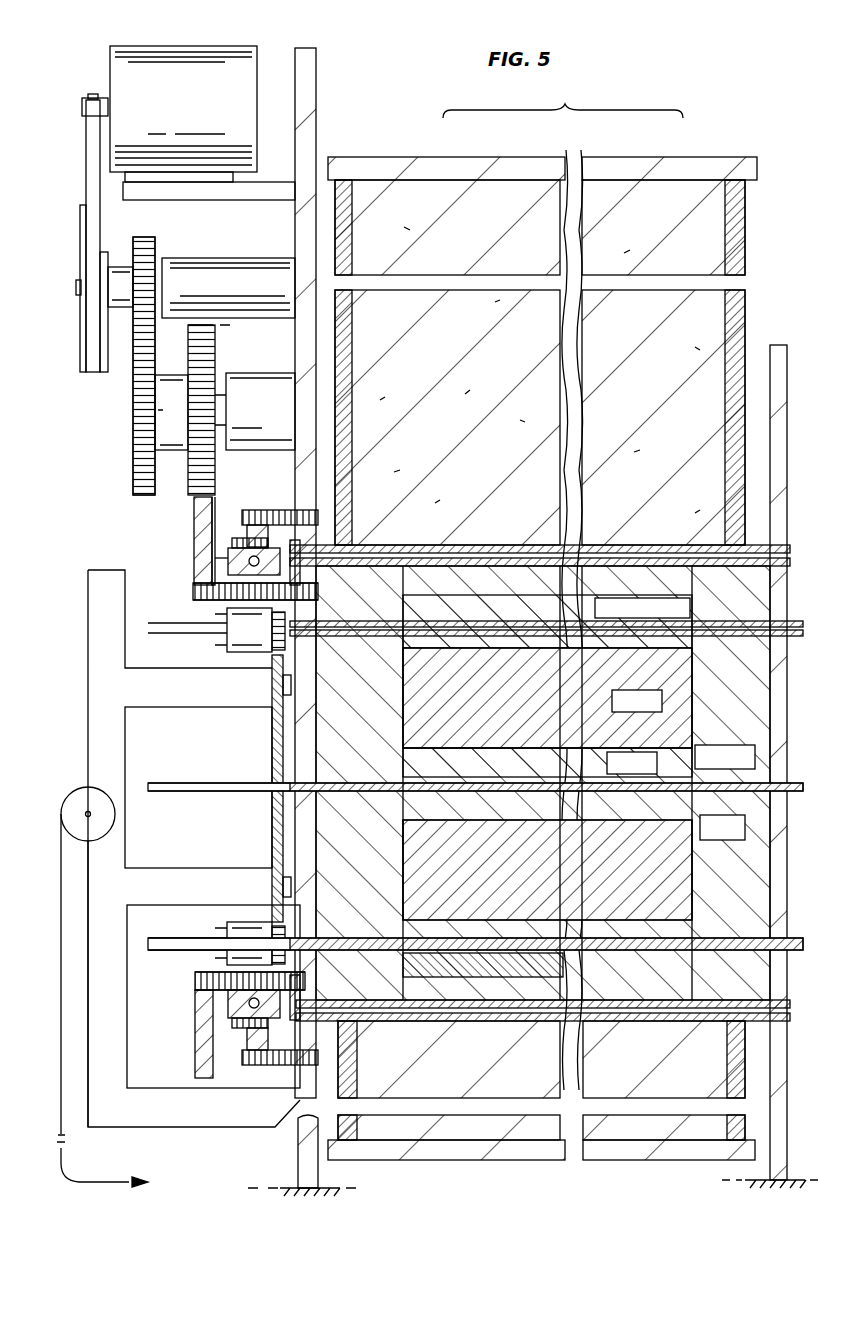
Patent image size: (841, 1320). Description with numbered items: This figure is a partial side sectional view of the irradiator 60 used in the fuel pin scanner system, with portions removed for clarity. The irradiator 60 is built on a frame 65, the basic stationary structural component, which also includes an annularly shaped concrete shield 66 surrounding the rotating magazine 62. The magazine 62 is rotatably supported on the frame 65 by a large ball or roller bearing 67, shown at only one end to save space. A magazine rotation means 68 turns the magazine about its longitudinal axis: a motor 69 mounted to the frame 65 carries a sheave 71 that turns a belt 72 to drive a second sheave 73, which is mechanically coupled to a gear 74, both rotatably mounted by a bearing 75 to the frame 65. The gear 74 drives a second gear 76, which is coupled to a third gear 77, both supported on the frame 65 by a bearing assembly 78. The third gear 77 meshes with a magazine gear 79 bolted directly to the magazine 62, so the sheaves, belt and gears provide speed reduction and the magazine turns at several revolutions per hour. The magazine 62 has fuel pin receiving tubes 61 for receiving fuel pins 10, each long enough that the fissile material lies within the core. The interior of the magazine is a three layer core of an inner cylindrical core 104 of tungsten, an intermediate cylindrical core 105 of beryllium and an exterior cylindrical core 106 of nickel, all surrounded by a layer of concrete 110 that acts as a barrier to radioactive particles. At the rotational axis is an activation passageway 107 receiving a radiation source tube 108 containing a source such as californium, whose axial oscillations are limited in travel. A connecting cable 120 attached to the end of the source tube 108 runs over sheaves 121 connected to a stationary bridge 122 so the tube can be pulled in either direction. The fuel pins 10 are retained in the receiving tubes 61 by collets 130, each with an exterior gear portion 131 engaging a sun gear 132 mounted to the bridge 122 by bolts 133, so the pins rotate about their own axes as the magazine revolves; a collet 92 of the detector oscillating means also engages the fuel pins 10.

The fuel pin 10 is at (148, 627).
The irradiator 60 is at (703, 134).
The fuel pin receiving tube 61 is at (356, 626).
The rotating magazine 62 is at (262, 724).
The frame 65 is at (313, 95).
The concrete shield 66 is at (435, 192).
The bearing 67 is at (218, 557).
The magazine rotation means 68 is at (104, 44).
The motor 69 is at (210, 62).
The sheave 71 is at (81, 106).
The belt 72 is at (93, 135).
The second sheave 73 is at (80, 230).
The gear 74 is at (150, 237).
The bearing 75 is at (244, 270).
The second gear 76 is at (133, 438).
The third gear 77 is at (215, 357).
The bearing assembly 78 is at (247, 393).
The magazine gear 79 is at (200, 537).
The collet 92 is at (243, 918).
The inner cylindrical core 104 is at (646, 774).
The intermediate cylindrical core 105 is at (650, 712).
The exterior cylindrical core 106 is at (547, 621).
The activation passageway 107 is at (748, 790).
The radiation source tube 108 is at (740, 795).
The concrete layer 110 is at (366, 732).
The connecting cable 120 is at (103, 795).
The sheave 121 is at (105, 814).
The stationary bridge 122 is at (110, 865).
The collet 130 is at (212, 620).
The exterior gear portion 131 is at (270, 630).
The sun gear 132 is at (272, 752).
The bolts 133 is at (290, 688).